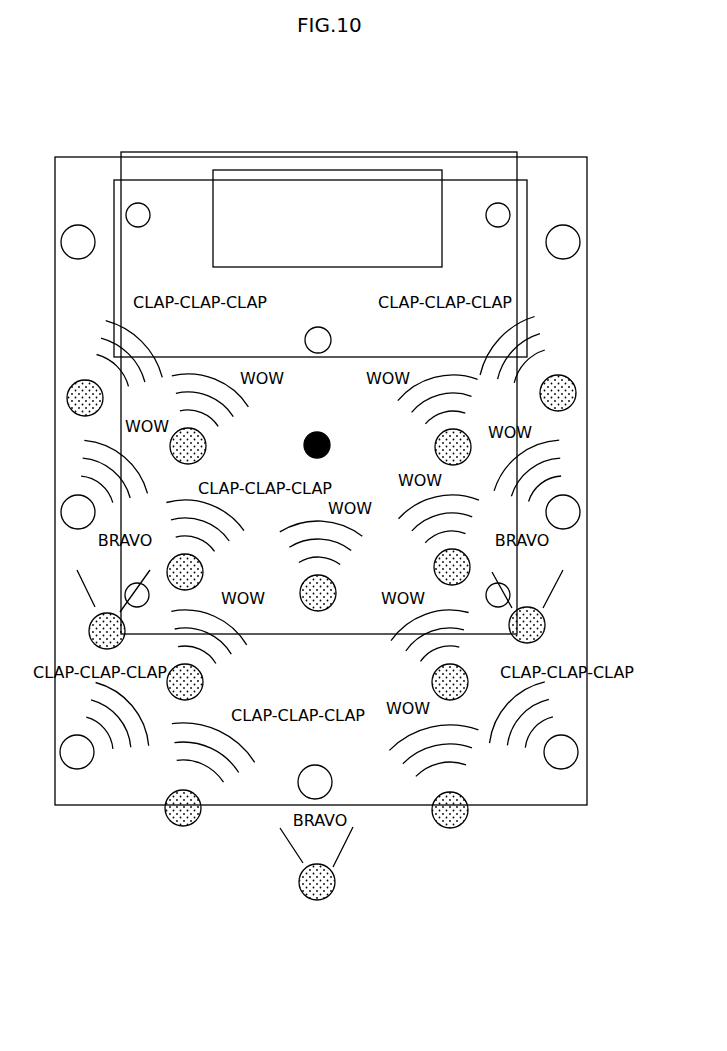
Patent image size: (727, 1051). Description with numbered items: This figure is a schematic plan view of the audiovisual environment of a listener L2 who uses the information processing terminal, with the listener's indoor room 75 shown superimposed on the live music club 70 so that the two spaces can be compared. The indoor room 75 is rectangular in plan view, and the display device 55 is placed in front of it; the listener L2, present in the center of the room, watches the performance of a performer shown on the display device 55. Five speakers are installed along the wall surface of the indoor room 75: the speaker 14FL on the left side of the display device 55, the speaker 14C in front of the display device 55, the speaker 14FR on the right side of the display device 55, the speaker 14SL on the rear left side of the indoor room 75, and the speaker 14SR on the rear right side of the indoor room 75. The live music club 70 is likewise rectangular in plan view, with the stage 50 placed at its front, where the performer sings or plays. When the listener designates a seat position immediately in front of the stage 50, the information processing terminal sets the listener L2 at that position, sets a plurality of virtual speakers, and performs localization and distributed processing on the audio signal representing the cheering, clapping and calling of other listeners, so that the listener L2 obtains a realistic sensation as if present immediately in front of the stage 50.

The live music club 70 is at (533, 160).
The indoor room 75 is at (477, 151).
The stage 50 is at (415, 180).
The display device 55 is at (388, 168).
The speaker 14FL is at (129, 206).
The speaker 14FR is at (508, 209).
The speaker 14C is at (328, 332).
The speaker 14SL is at (127, 588).
The speaker 14SR is at (509, 594).
The listener L2 is at (328, 437).